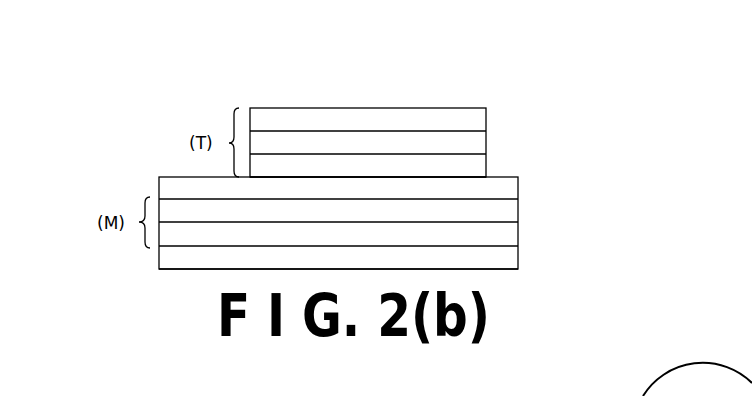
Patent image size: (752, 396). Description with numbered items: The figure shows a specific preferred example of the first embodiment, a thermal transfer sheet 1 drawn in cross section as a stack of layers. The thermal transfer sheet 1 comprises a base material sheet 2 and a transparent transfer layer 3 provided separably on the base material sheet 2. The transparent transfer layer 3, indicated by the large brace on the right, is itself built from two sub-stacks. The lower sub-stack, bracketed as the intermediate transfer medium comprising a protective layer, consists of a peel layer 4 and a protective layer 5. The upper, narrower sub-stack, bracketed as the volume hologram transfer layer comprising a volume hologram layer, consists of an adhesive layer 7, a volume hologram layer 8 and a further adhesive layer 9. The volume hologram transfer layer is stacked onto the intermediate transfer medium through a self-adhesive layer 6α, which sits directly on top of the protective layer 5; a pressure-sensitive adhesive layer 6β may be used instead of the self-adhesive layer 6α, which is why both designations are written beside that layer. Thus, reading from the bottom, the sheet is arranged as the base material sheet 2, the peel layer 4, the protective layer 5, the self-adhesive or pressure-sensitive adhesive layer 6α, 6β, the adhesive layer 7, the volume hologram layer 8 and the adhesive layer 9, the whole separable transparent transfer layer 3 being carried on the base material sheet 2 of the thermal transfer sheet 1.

The thermal transfer sheet 1 is at (377, 90).
The base material sheet 2 is at (505, 260).
The transparent transfer layer 3 is at (647, 103).
The peel layer 4 is at (507, 233).
The protective layer 5 is at (507, 210).
The self-adhesive layer / pressure-sensitive adhesive layer 6 is at (503, 189).
The adhesive layer 7 is at (473, 162).
The volume hologram layer 8 is at (473, 141).
The adhesive layer 9 is at (468, 114).